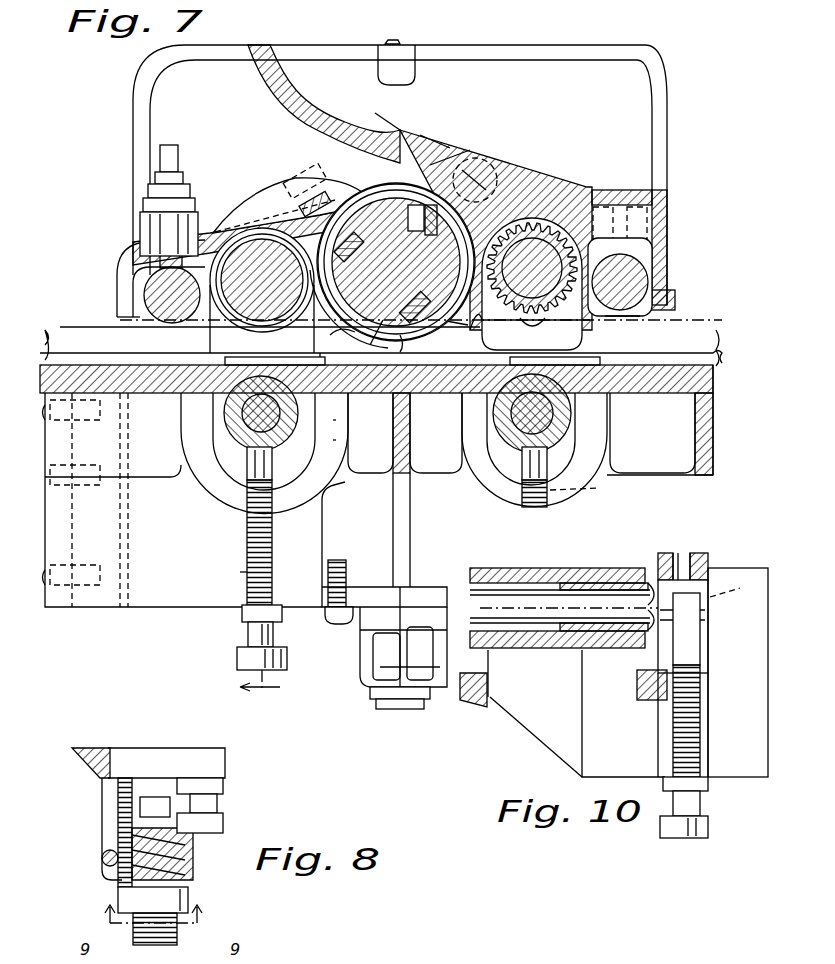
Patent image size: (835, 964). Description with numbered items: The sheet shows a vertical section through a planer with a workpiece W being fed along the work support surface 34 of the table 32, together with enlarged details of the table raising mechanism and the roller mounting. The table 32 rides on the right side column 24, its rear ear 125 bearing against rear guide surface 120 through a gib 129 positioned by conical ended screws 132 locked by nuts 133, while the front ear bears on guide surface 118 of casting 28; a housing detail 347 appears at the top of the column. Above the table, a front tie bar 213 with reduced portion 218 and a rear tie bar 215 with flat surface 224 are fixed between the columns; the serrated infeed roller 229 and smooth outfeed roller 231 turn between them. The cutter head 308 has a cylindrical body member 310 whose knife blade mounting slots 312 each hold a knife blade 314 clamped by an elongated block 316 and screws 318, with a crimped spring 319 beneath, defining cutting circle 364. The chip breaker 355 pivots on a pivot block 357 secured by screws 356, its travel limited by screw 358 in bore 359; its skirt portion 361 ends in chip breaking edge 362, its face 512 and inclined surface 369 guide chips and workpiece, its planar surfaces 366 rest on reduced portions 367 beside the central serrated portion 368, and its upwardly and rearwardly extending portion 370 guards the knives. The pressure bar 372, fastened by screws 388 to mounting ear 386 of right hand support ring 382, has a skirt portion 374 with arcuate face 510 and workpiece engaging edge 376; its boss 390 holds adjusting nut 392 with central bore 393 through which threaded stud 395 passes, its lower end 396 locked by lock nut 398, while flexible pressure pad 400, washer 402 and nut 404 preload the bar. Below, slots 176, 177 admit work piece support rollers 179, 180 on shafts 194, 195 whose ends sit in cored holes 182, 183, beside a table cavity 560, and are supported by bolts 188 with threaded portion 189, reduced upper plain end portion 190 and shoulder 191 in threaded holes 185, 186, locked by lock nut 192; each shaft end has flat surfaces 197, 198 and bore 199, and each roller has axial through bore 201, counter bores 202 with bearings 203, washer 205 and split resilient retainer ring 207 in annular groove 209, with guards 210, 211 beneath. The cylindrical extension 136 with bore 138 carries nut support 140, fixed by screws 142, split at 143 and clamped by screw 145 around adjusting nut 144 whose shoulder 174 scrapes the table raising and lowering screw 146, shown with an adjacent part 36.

In FIG. 7, the right side column 24 is at (658, 66).
In FIG. 7, the casting 28 is at (653, 110).
In FIG. 7, the pivot tab 347 is at (402, 44).
In FIG. 7, the chip breaker 355 is at (552, 160).
In FIG. 7, the downwardly facing planar surface 366 is at (598, 192).
In FIG. 7, the screws 356 is at (668, 214).
In FIG. 7, the skirt portion 361 is at (560, 205).
In FIG. 7, the central serrated portion 368 is at (592, 208).
In FIG. 7, the pivot block 357 is at (640, 318).
In FIG. 7, the reduced portion 218 is at (625, 322).
In FIG. 7, the front tie bar 213 is at (615, 326).
In FIG. 7, the upwardly and rearwardly extending portion 370 is at (330, 100).
In FIG. 7, the mounting ear 386 is at (400, 110).
In FIG. 7, the right hand support ring 382 is at (432, 132).
In FIG. 7, the screw 358 is at (478, 150).
In FIG. 7, the bore 359 is at (498, 165).
In FIG. 7, the face 512 is at (449, 151).
In FIG. 7, the slot 176 is at (516, 320).
In FIG. 7, the infeed roller 229 is at (536, 324).
In FIG. 7, the reduced portions 367 is at (556, 320).
In FIG. 7, the inclined surface 369 is at (470, 335).
In FIG. 7, the chip breaking edge 362 is at (452, 322).
In FIG. 7, the boss 390 is at (150, 244).
In FIG. 7, the central bore 393 is at (125, 256).
In FIG. 7, the lock nut 398 is at (128, 288).
In FIG. 7, the lower end 396 is at (128, 300).
In FIG. 7, the rear tie bar 215 is at (171, 300).
In FIG. 7, the pressure bar 372 is at (240, 172).
In FIG. 7, the screws 388 is at (290, 162).
In FIG. 7, the threaded stud 395 is at (170, 150).
In FIG. 7, the nut 404 is at (155, 178).
In FIG. 7, the washer 402 is at (148, 192).
In FIG. 7, the flexible pressure pad 400 is at (198, 205).
In FIG. 7, the adjusting nut 392 is at (140, 218).
In FIG. 7, the outfeed roller 231 is at (262, 290).
In FIG. 7, the skirt portion 374 is at (262, 280).
In FIG. 7, the flat surface 224 is at (262, 280).
In FIG. 7, the workpiece engaging edge 376 is at (392, 271).
In FIG. 7, the cutting circle 364 is at (396, 277).
In FIG. 7, the cylindrical body member 310 is at (412, 273).
In FIG. 7, the knife blade 314 is at (396, 218).
In FIG. 7, the knife blade mounting slot 312 is at (433, 236).
In FIG. 7, the elongated block 316 is at (368, 246).
In FIG. 7, the screws 318 is at (398, 300).
In FIG. 7, the crimped spring 319 is at (390, 332).
In FIG. 7, the face 510 is at (336, 331).
In FIG. 7, the slot 177 is at (327, 352).
In FIG. 7, the cutter head 308 is at (418, 348).
In FIG. 7, the guide surface 118 is at (668, 340).
In FIG. 7, the workpiece W is at (728, 330).
In FIG. 7, the work support surface 34 is at (718, 360).
In FIG. 7, the rear guide surface 120 is at (125, 348).
In FIG. 7, the reduced upper plain end portion 190 is at (225, 360).
In FIG. 10, the reduced upper plain end portion 190 is at (682, 553).
In FIG. 7, the table 32 is at (714, 408).
In FIG. 7, the guard 211 is at (192, 452).
In FIG. 10, the guard 211 is at (470, 708).
In FIG. 7, the shaft 195 is at (242, 416).
In FIG. 10, the shaft 195 is at (522, 600).
In FIG. 7, the threaded hole 186 is at (274, 535).
In FIG. 10, the threaded hole 186 is at (672, 716).
In FIG. 7, the threaded portion 189 is at (246, 572).
In FIG. 10, the threaded portion 189 is at (672, 740).
In FIG. 7, the lock nut 192 is at (242, 614).
In FIG. 10, the lock nut 192 is at (708, 784).
In FIG. 7, the bolt 188 is at (228, 654).
In FIG. 10, the bolt 188 is at (716, 824).
In FIG. 7, the cavity 560 is at (350, 410).
In FIG. 7, the work piece support roller 180 is at (352, 416).
In FIG. 10, the work piece support roller 180 is at (512, 568).
In FIG. 7, the cored hole 183 is at (352, 436).
In FIG. 10, the cored hole 183 is at (700, 652).
In FIG. 7, the cylindrical extension 136 is at (334, 566).
In FIG. 8, the cylindrical extension 136 is at (94, 748).
In FIG. 7, the work piece support roller 179 is at (520, 416).
In FIG. 7, the cored hole 182 is at (500, 440).
In FIG. 7, the shaft 194 is at (602, 410).
In FIG. 7, the guard 210 is at (605, 440).
In FIG. 7, the threaded hole 185 is at (560, 500).
In FIG. 7, the conical ended screws 132 is at (102, 465).
In FIG. 7, the nuts 133 is at (39, 509).
In FIG. 7, the rear ear 125 is at (65, 528).
In FIG. 7, the gib 129 is at (140, 544).
In FIG. 7, the nut support 140 is at (362, 634).
In FIG. 8, the nut support 140 is at (102, 785).
In FIG. 7, the screws 142 is at (325, 614).
In FIG. 8, the screws 142 is at (118, 806).
In FIG. 7, the split 143 is at (400, 616).
In FIG. 8, the split 143 is at (118, 822).
In FIG. 7, the screw 145 is at (368, 665).
In FIG. 8, the screw 145 is at (102, 858).
In FIG. 10, the axial through bore 201 is at (515, 640).
In FIG. 10, the annular groove 209 is at (660, 598).
In FIG. 10, the bearing 203 is at (575, 566).
In FIG. 10, the counter bore 202 is at (596, 568).
In FIG. 10, the washer 205 is at (652, 568).
In FIG. 10, the flat surface 198 is at (715, 568).
In FIG. 10, the bore 199 is at (738, 594).
In FIG. 10, the shoulder 191 is at (708, 612).
In FIG. 10, the flat surface 197 is at (708, 622).
In FIG. 10, the split resilient retainer ring 207 is at (638, 654).
In FIG. 8, the bore 138 is at (118, 748).
In FIG. 8, the table raising and lowering screw 146 is at (195, 838).
In FIG. 8, the spring 36 is at (208, 868).
In FIG. 8, the adjusting nut 144 is at (118, 892).
In FIG. 8, the shoulder 174 is at (188, 892).